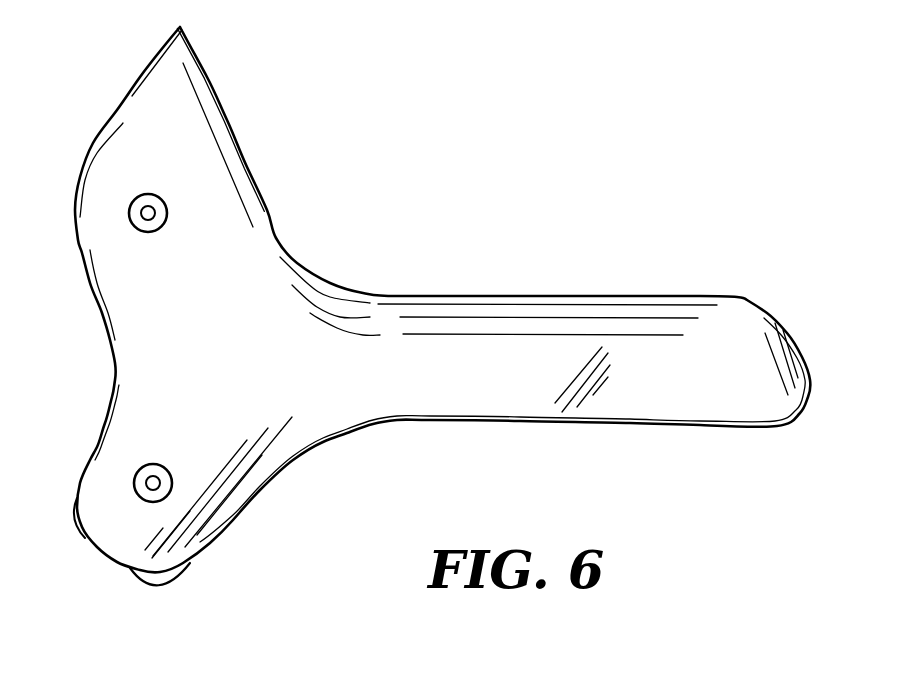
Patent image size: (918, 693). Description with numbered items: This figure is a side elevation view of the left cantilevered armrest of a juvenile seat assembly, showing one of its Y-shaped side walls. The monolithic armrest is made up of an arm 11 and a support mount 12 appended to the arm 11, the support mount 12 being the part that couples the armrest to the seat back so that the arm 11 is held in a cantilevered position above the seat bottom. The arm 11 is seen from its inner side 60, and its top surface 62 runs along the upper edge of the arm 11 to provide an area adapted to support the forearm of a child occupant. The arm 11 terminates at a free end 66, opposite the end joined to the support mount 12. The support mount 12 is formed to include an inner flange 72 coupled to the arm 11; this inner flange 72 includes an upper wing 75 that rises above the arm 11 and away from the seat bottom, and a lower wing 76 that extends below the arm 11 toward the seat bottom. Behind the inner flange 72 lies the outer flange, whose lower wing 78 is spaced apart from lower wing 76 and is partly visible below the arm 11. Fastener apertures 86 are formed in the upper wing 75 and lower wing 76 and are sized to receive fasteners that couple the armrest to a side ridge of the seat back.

The arm 11 is at (803, 285).
The support mount 12 is at (240, 282).
The inner side 60 is at (657, 407).
The top surface 62 is at (497, 301).
The free end 66 is at (793, 365).
The inner flange 72 is at (183, 127).
The upper wing 75 is at (147, 107).
The lower wing 76 is at (207, 502).
The lower wing 78 is at (170, 587).
The fastener apertures 86 is at (148, 213).